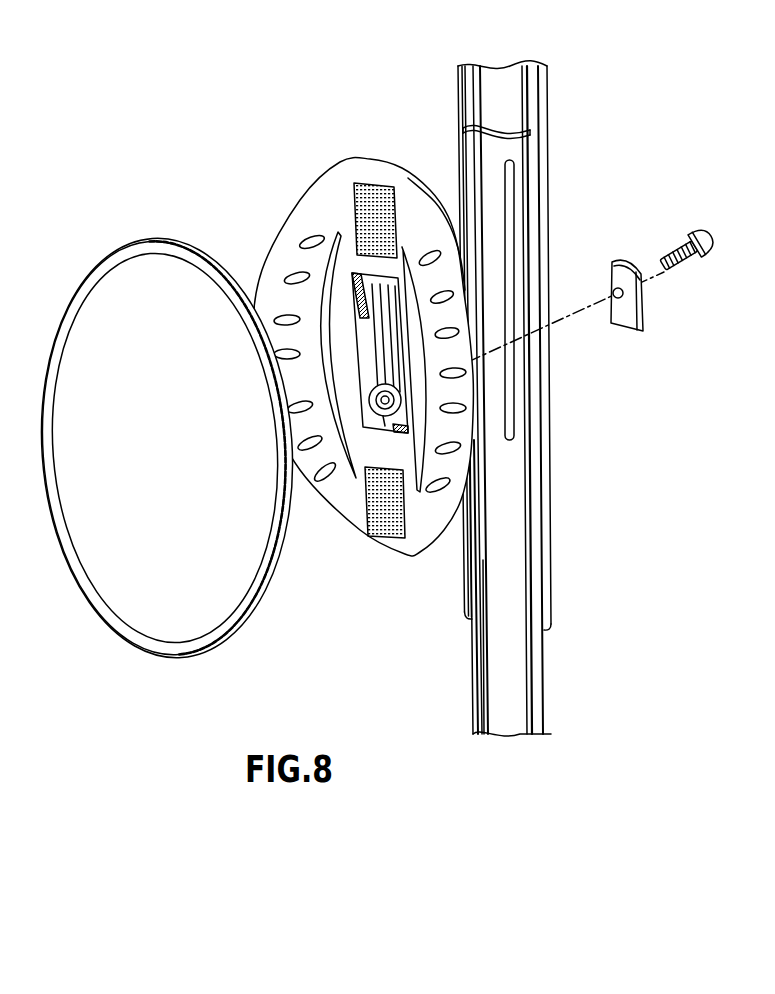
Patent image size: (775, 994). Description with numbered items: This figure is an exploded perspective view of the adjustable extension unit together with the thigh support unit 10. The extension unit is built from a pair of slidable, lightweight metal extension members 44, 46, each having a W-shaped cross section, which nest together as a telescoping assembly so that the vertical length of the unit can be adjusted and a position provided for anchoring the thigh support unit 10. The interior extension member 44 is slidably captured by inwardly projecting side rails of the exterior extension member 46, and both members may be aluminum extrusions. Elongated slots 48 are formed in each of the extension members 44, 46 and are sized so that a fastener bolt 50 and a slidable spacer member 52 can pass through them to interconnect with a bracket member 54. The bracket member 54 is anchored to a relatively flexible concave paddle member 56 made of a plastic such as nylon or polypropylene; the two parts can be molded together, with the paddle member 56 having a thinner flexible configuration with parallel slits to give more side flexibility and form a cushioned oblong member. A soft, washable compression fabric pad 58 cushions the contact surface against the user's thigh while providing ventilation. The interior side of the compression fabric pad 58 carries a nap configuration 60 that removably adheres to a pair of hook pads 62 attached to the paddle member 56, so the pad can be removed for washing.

The thigh support unit 10 is at (190, 138).
The interior extension member 44 is at (559, 398).
The exterior extension member 46 is at (505, 667).
The elongated slots 48 is at (517, 435).
The fastener bolt 50 is at (688, 268).
The slidable spacer member 52 is at (634, 327).
The bracket member 54 is at (377, 318).
The paddle member 56 is at (363, 353).
The compression fabric pad 58 is at (103, 312).
The nap configuration 60 is at (191, 443).
The hook pads 62 is at (373, 191).